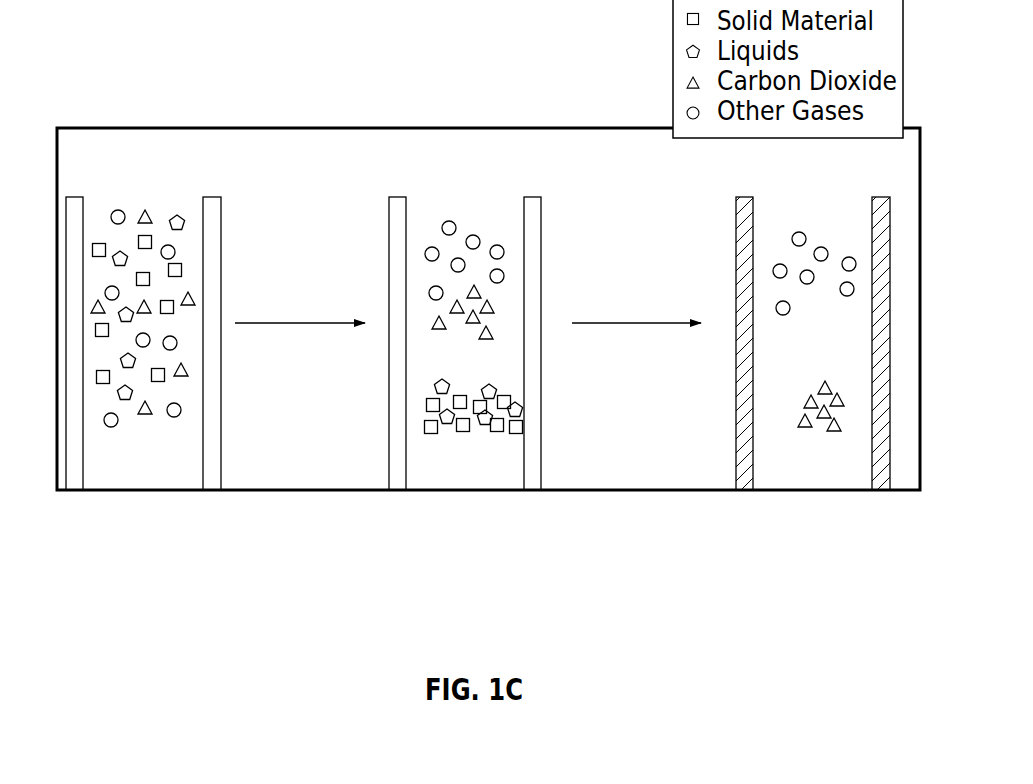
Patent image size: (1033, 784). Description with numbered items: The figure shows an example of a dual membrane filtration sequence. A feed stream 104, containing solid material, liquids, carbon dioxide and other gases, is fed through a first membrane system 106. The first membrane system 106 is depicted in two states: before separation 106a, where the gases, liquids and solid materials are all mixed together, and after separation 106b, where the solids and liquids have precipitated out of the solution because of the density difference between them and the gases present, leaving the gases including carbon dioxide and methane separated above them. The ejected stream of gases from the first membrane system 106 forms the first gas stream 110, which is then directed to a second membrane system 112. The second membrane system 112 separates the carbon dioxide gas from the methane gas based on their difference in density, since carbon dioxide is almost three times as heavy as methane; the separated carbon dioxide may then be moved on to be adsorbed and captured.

The feed stream 104 is at (128, 166).
The first membrane system 106 is at (374, 236).
The first membrane system before separation 106a is at (128, 341).
The first membrane system after separation 106b is at (467, 450).
The first gas stream 110 is at (655, 306).
The second membrane system 112 is at (817, 450).